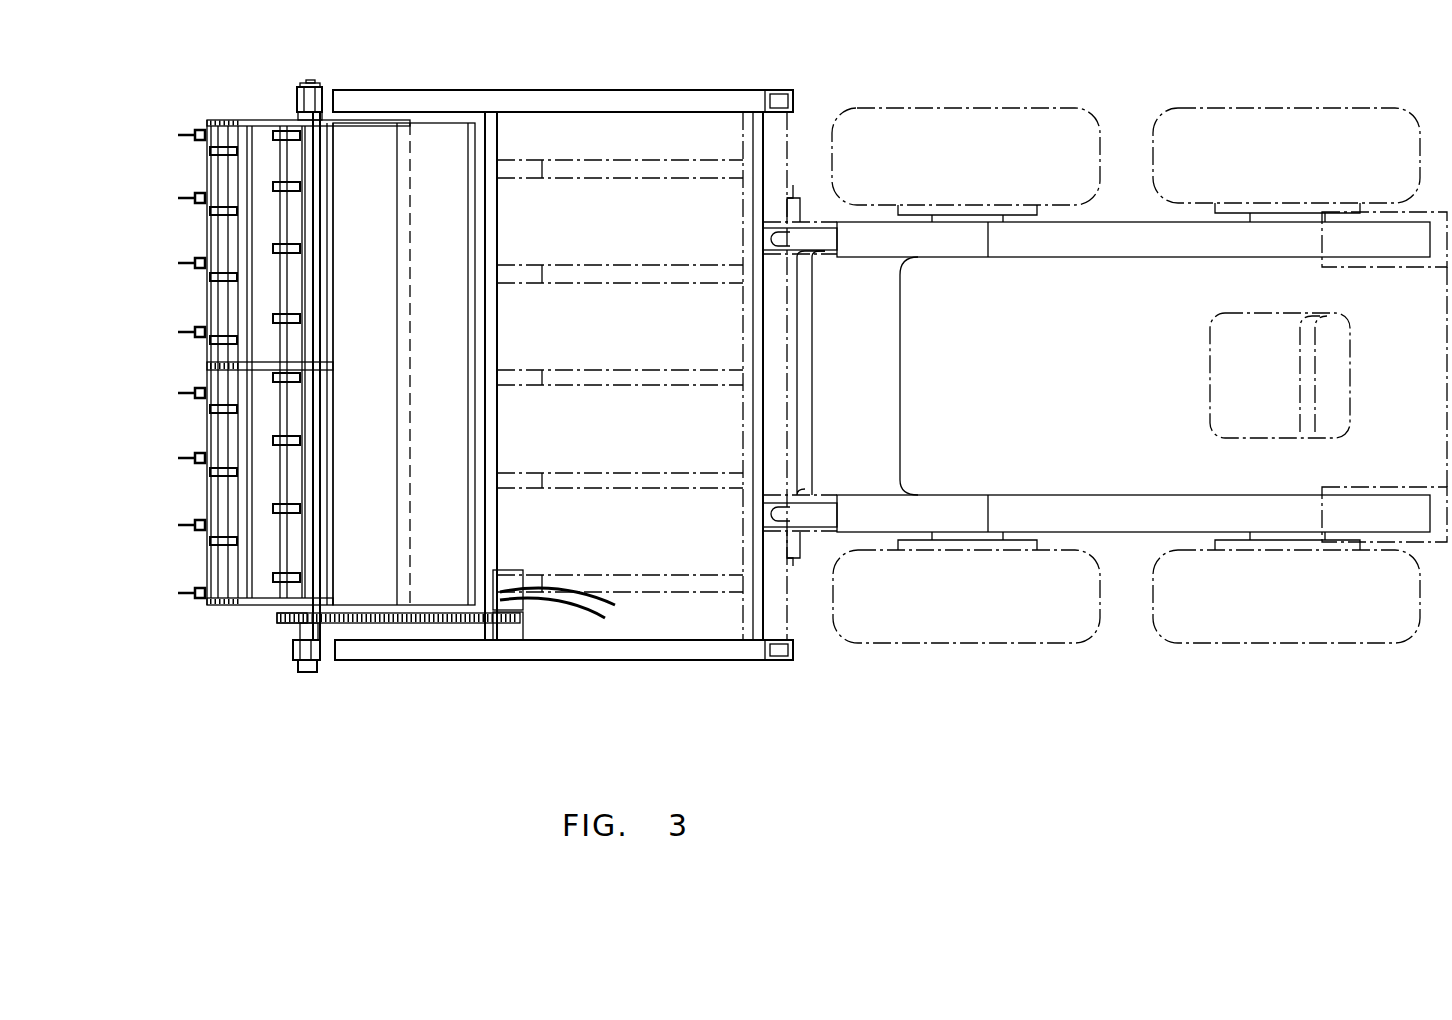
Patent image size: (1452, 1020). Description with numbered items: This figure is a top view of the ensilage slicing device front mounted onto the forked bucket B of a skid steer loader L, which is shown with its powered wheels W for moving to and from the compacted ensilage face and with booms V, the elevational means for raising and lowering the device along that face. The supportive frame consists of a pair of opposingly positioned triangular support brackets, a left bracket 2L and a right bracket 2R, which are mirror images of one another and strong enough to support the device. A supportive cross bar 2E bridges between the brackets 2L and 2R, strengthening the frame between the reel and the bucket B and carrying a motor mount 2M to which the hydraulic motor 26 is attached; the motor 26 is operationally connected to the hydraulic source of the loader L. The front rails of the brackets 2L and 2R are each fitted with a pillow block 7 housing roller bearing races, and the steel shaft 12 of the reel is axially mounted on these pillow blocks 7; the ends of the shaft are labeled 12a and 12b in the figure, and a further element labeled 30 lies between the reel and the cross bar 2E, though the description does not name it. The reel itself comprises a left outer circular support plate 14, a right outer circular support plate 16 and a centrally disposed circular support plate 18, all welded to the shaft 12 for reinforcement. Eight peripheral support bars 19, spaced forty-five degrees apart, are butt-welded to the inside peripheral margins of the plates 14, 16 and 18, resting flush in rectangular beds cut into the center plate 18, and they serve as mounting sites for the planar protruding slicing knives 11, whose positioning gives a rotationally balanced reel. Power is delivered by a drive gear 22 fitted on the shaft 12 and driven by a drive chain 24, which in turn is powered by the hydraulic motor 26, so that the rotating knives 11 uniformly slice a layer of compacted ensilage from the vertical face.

The pillow block 7 is at (297, 98).
The slicing knives 11 is at (178, 198).
The shaft 12 is at (305, 85).
The upper shaft end 12a is at (318, 84).
The lower shaft end 12b is at (310, 673).
The left outer circular support plate 14 is at (212, 606).
The right outer circular support plate 16 is at (228, 122).
The center support plate 18 is at (207, 365).
The peripheral support bars 19 is at (287, 230).
The drive gear 22 is at (283, 625).
The drive chain 24 is at (405, 627).
The hydraulic motor 26 is at (510, 580).
The brush cover 30 is at (404, 364).
The supportive cross bar 2E is at (488, 430).
The left triangular support bracket 2L is at (717, 660).
The motor mount 2M is at (507, 640).
The right triangular support bracket 2R is at (597, 90).
The forked bucket B is at (775, 128).
The skid steer loader L is at (1173, 376).
The booms V is at (1127, 222).
The powered wheels W is at (933, 118).